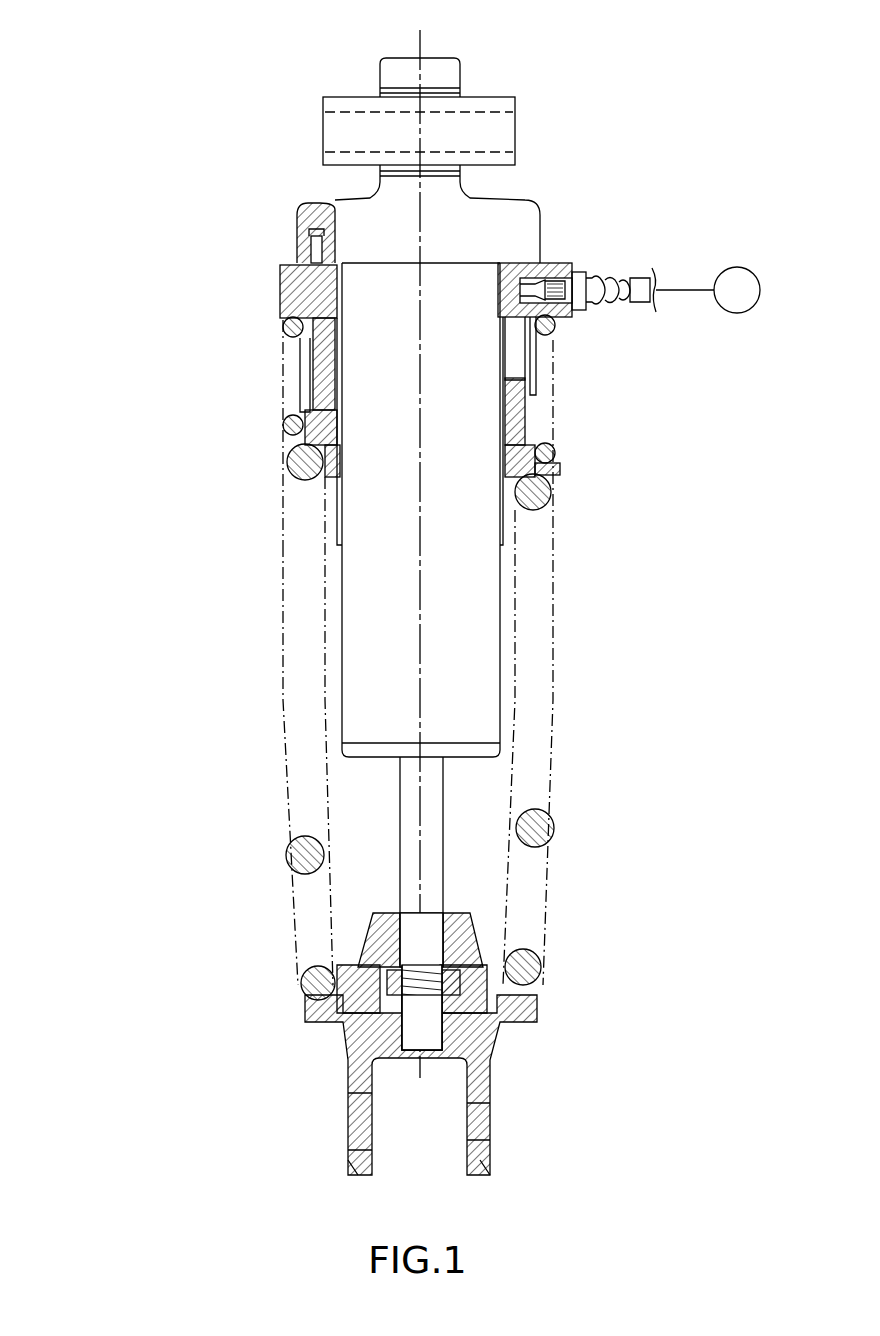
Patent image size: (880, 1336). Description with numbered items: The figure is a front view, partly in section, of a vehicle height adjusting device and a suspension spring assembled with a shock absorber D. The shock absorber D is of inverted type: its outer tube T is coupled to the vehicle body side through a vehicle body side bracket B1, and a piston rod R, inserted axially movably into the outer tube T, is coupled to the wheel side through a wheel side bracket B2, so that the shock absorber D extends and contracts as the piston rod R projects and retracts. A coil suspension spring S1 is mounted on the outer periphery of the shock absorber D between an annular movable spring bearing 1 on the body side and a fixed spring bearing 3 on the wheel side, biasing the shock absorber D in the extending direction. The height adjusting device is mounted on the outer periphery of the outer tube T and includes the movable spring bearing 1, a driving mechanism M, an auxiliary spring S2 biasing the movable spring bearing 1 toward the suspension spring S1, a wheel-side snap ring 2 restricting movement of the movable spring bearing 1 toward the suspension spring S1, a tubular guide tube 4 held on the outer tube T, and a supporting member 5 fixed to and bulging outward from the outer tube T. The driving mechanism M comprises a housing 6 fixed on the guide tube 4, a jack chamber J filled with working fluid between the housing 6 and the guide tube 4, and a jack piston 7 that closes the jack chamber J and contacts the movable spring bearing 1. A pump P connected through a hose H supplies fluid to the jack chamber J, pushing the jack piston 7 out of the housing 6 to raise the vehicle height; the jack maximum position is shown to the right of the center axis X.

The center axis X is at (422, 40).
The vehicle body side bracket B1 is at (500, 98).
The wheel side bracket B2 is at (480, 1082).
The supporting member 5 is at (305, 212).
The housing 6 is at (283, 295).
The hose H is at (640, 284).
The pump P is at (737, 267).
The outer tube T is at (478, 622).
The piston rod R is at (412, 794).
The driving mechanism M is at (298, 364).
The movable spring bearing 1 is at (287, 435).
The snap ring 2 is at (337, 518).
The guide tube 4 is at (513, 530).
The jack chamber J is at (514, 343).
The jack piston 7 is at (515, 414).
The auxiliary spring S2 is at (556, 454).
The suspension spring S1 is at (550, 832).
The shock absorber D is at (323, 679).
The fixed spring bearing 3 is at (312, 1025).